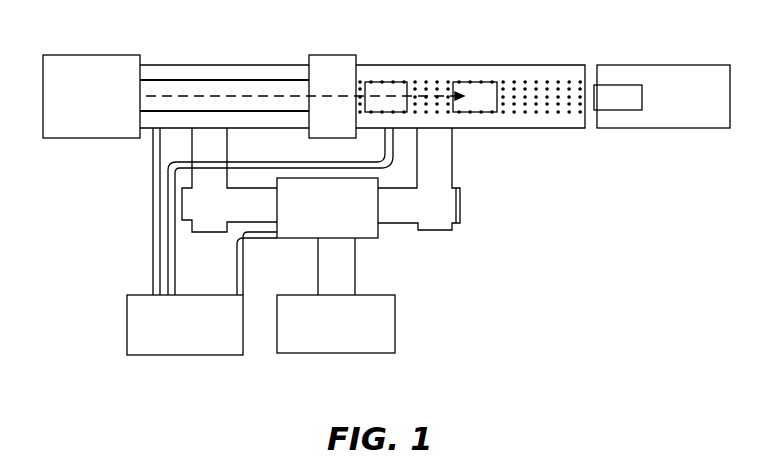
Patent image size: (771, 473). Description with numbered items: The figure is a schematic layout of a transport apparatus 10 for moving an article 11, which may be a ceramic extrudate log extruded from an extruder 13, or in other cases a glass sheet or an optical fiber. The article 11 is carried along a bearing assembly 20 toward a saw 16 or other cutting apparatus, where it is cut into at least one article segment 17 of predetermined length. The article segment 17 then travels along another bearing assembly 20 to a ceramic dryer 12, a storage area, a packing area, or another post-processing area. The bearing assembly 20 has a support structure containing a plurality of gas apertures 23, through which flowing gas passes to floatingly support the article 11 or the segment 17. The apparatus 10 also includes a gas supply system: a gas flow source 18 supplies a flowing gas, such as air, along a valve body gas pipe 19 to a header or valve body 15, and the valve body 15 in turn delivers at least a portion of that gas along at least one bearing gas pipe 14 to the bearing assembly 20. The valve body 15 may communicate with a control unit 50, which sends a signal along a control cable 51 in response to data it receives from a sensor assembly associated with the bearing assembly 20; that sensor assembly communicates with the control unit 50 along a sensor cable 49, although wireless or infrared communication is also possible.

The transport apparatus 10 is at (560, 187).
The article 11 is at (225, 92).
The ceramic dryer 12 is at (648, 75).
The extruder 13 is at (93, 72).
The bearing gas pipe 14 is at (443, 168).
The valve body 15 is at (372, 243).
The saw 16 is at (340, 65).
The article segment 17 is at (377, 88).
The gas flow source 18 is at (380, 333).
The valve body gas pipe 19 is at (355, 272).
The bearing assembly 20 is at (198, 65).
The gas apertures 23 is at (537, 82).
The sensor cable 49 is at (265, 163).
The control unit 50 is at (145, 327).
The control cable 51 is at (238, 266).